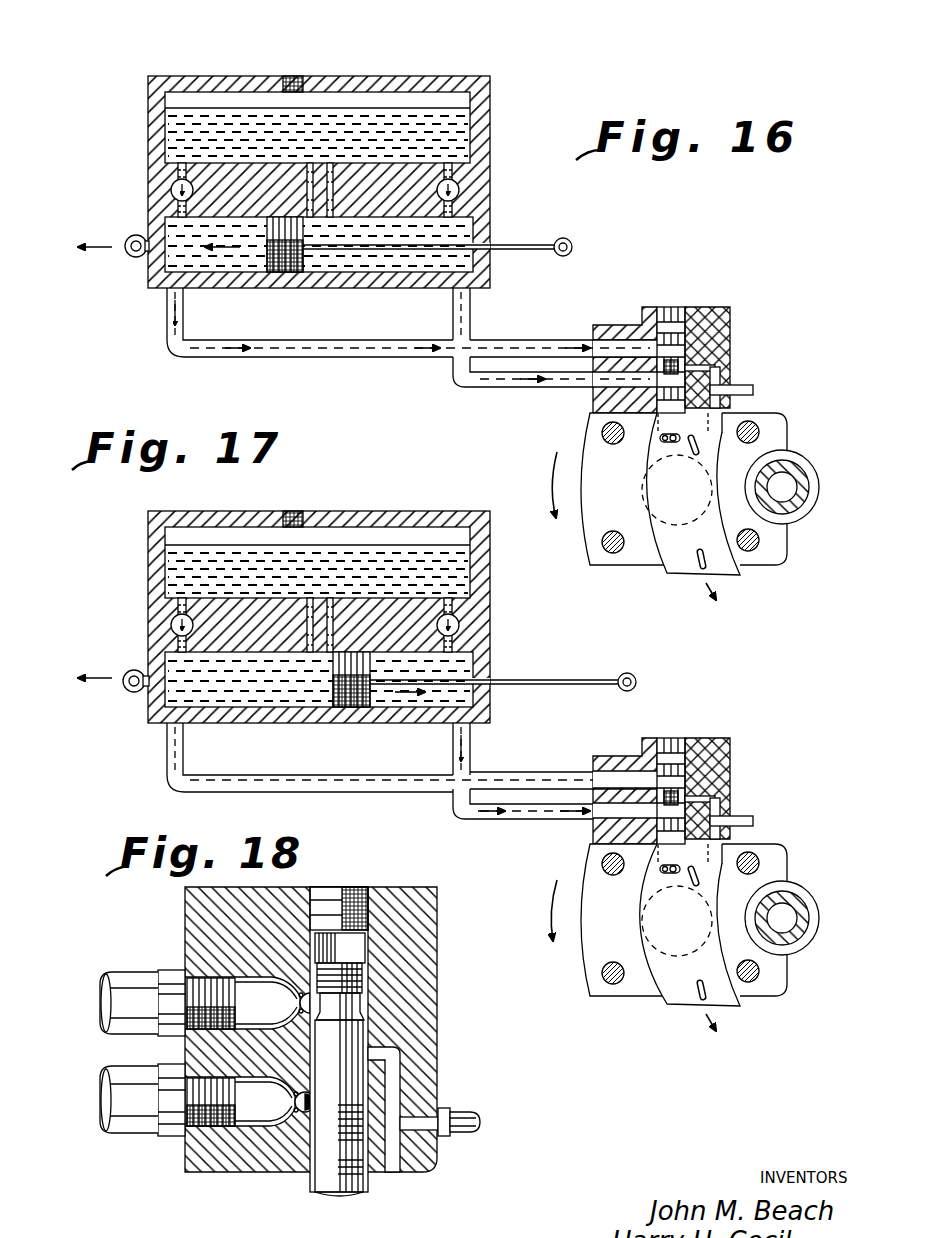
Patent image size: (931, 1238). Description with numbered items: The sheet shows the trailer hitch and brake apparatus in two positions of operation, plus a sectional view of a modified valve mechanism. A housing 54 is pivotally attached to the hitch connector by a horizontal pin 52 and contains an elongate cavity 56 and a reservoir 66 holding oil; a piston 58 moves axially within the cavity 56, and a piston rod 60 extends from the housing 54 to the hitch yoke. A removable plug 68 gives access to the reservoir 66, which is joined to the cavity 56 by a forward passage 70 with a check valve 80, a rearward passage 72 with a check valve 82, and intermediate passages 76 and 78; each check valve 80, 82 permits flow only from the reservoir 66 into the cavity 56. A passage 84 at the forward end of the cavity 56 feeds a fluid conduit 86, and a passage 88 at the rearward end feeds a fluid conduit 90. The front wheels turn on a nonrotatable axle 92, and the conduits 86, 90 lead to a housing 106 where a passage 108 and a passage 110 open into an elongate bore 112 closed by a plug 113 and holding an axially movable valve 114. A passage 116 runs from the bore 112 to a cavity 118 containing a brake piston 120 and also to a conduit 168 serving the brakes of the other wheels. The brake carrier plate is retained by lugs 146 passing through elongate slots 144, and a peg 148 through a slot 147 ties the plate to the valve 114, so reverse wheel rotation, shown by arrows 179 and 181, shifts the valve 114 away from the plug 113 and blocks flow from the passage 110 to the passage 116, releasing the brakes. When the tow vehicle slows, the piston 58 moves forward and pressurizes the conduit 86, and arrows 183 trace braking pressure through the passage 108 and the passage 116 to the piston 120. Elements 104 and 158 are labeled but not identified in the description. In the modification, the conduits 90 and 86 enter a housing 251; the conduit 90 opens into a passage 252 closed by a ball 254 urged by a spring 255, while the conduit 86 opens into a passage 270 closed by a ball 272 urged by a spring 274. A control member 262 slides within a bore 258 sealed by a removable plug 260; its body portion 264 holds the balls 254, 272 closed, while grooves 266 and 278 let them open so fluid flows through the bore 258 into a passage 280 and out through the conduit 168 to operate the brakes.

In FIG. 16, the pin 52 is at (133, 258).
In FIG. 17, the pin 52 is at (98, 699).
In FIG. 16, the housing 54 is at (319, 161).
In FIG. 17, the housing 54 is at (319, 599).
In FIG. 16, the elongate cavity 56 is at (252, 268).
In FIG. 17, the elongate cavity 56 is at (313, 704).
In FIG. 16, the piston 58 is at (288, 273).
In FIG. 17, the piston 58 is at (351, 715).
In FIG. 16, the piston rod 60 is at (532, 245).
In FIG. 17, the piston rod 60 is at (503, 668).
In FIG. 16, the reservoir 66 is at (188, 100).
In FIG. 17, the reservoir 66 is at (317, 539).
In FIG. 16, the plug 68 is at (298, 76).
In FIG. 17, the plug 68 is at (308, 501).
In FIG. 16, the passage 70 is at (454, 180).
In FIG. 17, the passage 70 is at (479, 620).
In FIG. 16, the passage 72 is at (176, 186).
In FIG. 17, the passage 72 is at (147, 624).
In FIG. 16, the passage 76 is at (334, 176).
In FIG. 17, the passage 76 is at (353, 613).
In FIG. 16, the passage 78 is at (308, 166).
In FIG. 17, the passage 78 is at (289, 610).
In FIG. 16, the check valve 80 is at (460, 193).
In FIG. 17, the check valve 80 is at (483, 628).
In FIG. 16, the check valve 82 is at (171, 195).
In FIG. 17, the check valve 82 is at (149, 630).
In FIG. 16, the passage 84 is at (463, 296).
In FIG. 17, the passage 84 is at (493, 735).
In FIG. 16, the fluid conduit 86 is at (483, 390).
In FIG. 17, the fluid conduit 86 is at (523, 831).
In FIG. 18, the fluid conduit 86 is at (108, 1080).
In FIG. 16, the passage 88 is at (170, 294).
In FIG. 17, the passage 88 is at (284, 757).
In FIG. 16, the fluid conduit 90 is at (285, 358).
In FIG. 17, the fluid conduit 90 is at (423, 780).
In FIG. 18, the fluid conduit 90 is at (108, 982).
In FIG. 16, the nonrotatable axle 92 is at (818, 482).
In FIG. 17, the nonrotatable axle 92 is at (805, 918).
In FIG. 16, the mounting plate with bolts 104 is at (760, 432).
In FIG. 17, the mounting plate with bolts 104 is at (785, 917).
In FIG. 16, the housing 106 is at (736, 325).
In FIG. 17, the housing 106 is at (780, 713).
In FIG. 16, the passage 108 is at (596, 399).
In FIG. 17, the passage 108 is at (596, 774).
In FIG. 17, the passage 110 is at (625, 788).
In FIG. 16, the elongate bore 112 is at (660, 310).
In FIG. 17, the elongate bore 112 is at (660, 775).
In FIG. 16, the plug 113 is at (676, 318).
In FIG. 17, the plug 113 is at (699, 753).
In FIG. 16, the elongate valve 114 is at (726, 320).
In FIG. 17, the elongate valve 114 is at (737, 784).
In FIG. 16, the passage 116 is at (722, 370).
In FIG. 17, the passage 116 is at (747, 798).
In FIG. 16, the cavity 118 is at (612, 336).
In FIG. 17, the piston 120 is at (621, 988).
In FIG. 16, the elongate slots 144 is at (700, 457).
In FIG. 17, the elongate slots 144 is at (710, 938).
In FIG. 16, the lug 146 is at (700, 435).
In FIG. 17, the lug 146 is at (727, 930).
In FIG. 16, the slot 147 is at (662, 440).
In FIG. 17, the slot 147 is at (628, 904).
In FIG. 16, the peg 148 is at (672, 445).
In FIG. 17, the peg 148 is at (665, 899).
In FIG. 16, the mounting plate with bolts 158 is at (602, 432).
In FIG. 17, the mounting plate with bolts 158 is at (605, 927).
In FIG. 16, the conduit 168 is at (752, 388).
In FIG. 17, the conduit 168 is at (765, 802).
In FIG. 18, the conduit 168 is at (480, 1122).
In FIG. 16, the arrow 179 is at (98, 250).
In FIG. 17, the arrow 179 is at (82, 663).
In FIG. 16, the arrow 181 is at (530, 485).
In FIG. 17, the arrow 181 is at (526, 910).
In FIG. 17, the arrows 183 is at (516, 796).
In FIG. 18, the housing 251 is at (438, 1050).
In FIG. 18, the fluid passage 252 is at (238, 984).
In FIG. 18, the ball 254 is at (308, 992).
In FIG. 18, the spring 255 is at (298, 995).
In FIG. 18, the bore 258 is at (357, 950).
In FIG. 18, the removable plug 260 is at (355, 888).
In FIG. 18, the control member 262 is at (368, 1017).
In FIG. 18, the body portion 264 is at (395, 1082).
In FIG. 18, the groove 266 is at (357, 982).
In FIG. 18, the fluid passage 270 is at (256, 1106).
In FIG. 18, the ball 272 is at (304, 1082).
In FIG. 18, the spring 274 is at (290, 1135).
In FIG. 18, the groove 278 is at (335, 1128).
In FIG. 18, the passage 280 is at (400, 1098).